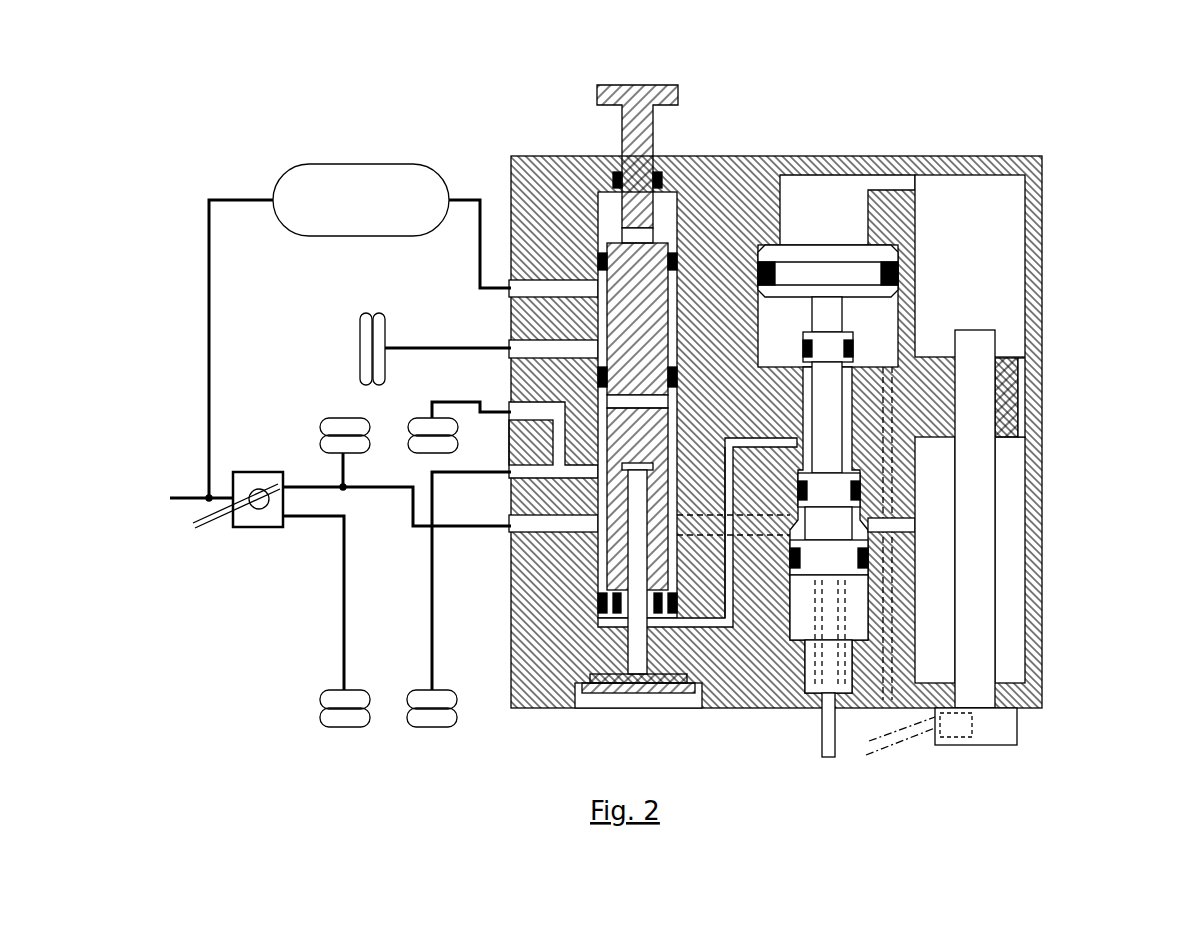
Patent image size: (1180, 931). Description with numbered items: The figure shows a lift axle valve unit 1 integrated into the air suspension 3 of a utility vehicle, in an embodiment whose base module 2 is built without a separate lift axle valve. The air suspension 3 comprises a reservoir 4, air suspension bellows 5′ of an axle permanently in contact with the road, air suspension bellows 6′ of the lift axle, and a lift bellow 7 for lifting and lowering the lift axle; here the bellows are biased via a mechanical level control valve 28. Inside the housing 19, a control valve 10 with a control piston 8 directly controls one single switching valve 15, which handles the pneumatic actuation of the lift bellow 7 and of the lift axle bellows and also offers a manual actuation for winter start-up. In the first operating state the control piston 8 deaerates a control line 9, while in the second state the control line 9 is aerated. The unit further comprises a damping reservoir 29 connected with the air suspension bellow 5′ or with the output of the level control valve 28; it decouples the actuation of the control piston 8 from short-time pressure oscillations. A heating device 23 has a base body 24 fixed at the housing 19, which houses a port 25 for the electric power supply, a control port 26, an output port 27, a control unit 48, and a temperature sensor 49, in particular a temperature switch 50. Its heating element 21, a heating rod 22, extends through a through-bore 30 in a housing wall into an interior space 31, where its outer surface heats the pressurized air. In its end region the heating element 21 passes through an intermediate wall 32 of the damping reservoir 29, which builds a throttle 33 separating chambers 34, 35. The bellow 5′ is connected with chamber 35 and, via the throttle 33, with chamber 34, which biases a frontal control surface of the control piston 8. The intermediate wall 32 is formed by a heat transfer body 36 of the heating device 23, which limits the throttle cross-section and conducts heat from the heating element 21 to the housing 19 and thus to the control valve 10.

The lift axle valve unit 1 is at (823, 415).
The base module 2 is at (533, 122).
The air suspension 3 is at (389, 137).
The reservoir 4 is at (361, 200).
The air suspension bellow 5′ is at (340, 430).
The air suspension bellow 6′ is at (426, 447).
The lift bellow 7 is at (358, 348).
The control piston 8 is at (829, 316).
The control line 9 is at (726, 630).
The control valve 10 is at (819, 205).
The switching valve 15 is at (666, 203).
The housing 19 is at (990, 168).
The heating element 21 is at (1052, 610).
The heating rod 22 is at (983, 612).
The heating device 23 is at (1034, 729).
The base body 24 is at (994, 749).
The port 25 is at (910, 753).
The control port 26 is at (910, 753).
The output port 27 is at (935, 727).
The mechanical level control valve 28 is at (262, 528).
The damping reservoir 29 is at (1010, 505).
The through-bore 30 is at (997, 691).
The interior space 31 is at (973, 560).
The intermediate wall 32 is at (1071, 397).
The throttle 33 is at (1020, 408).
The chamber 34 is at (970, 266).
The chamber 35 is at (935, 560).
The heat transfer body 36 is at (1010, 370).
The control unit 48 is at (956, 725).
The temperature sensor 49 is at (994, 749).
The temperature switch 50 is at (1003, 732).